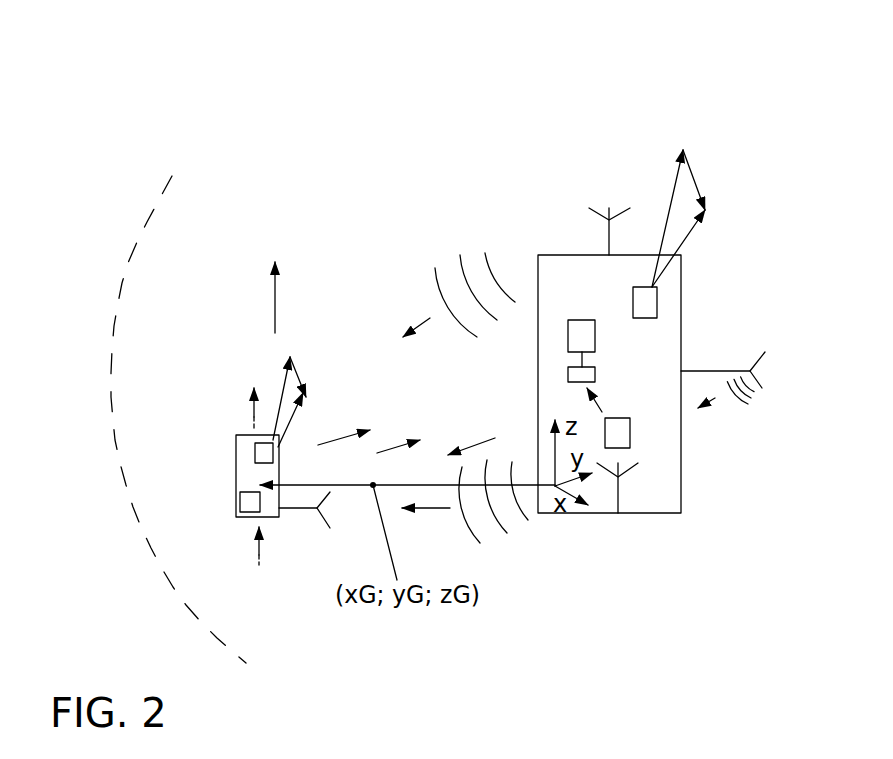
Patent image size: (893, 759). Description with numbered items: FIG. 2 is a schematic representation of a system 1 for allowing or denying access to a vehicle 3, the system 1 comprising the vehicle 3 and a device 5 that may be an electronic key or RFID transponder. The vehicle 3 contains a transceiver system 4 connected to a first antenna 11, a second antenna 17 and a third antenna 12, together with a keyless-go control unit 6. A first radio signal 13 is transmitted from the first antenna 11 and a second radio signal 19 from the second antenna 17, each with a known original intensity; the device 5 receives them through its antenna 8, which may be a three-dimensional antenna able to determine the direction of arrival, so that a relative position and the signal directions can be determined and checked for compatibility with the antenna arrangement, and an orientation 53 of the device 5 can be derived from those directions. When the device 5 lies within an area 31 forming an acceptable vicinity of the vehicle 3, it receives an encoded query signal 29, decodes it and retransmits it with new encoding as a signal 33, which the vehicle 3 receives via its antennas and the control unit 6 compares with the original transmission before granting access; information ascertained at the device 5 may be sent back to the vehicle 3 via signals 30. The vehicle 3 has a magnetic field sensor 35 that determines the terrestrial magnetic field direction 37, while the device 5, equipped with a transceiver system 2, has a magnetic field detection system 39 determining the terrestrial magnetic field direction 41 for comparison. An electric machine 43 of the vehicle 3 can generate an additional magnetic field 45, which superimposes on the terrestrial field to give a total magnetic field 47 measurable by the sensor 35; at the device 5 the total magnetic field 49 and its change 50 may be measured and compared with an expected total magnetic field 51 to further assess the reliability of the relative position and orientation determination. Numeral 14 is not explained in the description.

The system 1 is at (740, 107).
The transceiver system 2 is at (248, 507).
The vehicle 3 is at (626, 528).
The transceiver system 4 is at (580, 322).
The device 5 is at (259, 555).
The keyless-go control unit 6 is at (592, 377).
The antenna 8 is at (298, 508).
The first antenna 11 is at (609, 243).
The third antenna 12 is at (715, 371).
The first radio signal 13 is at (430, 318).
The received signal 14 is at (715, 398).
The second antenna 17 is at (618, 497).
The second radio signal 19 is at (423, 508).
The encoded query signal 29 is at (477, 443).
The signals 30 is at (339, 440).
The area 31 is at (135, 463).
The signal 33 is at (388, 448).
The magnetic field sensor 35 is at (646, 312).
The terrestrial magnetic field direction 37 is at (690, 229).
The magnetic field detection system 39 is at (258, 453).
The terrestrial magnetic field direction 41 is at (293, 413).
The electric machine 43 is at (625, 423).
The additional magnetic field 45 is at (695, 173).
The total magnetic field 47 is at (670, 210).
The total magnetic field 49 is at (282, 392).
The change of the total magnetic field 50 is at (300, 382).
The expected total magnetic field 51 is at (274, 310).
The orientation 53 is at (254, 417).